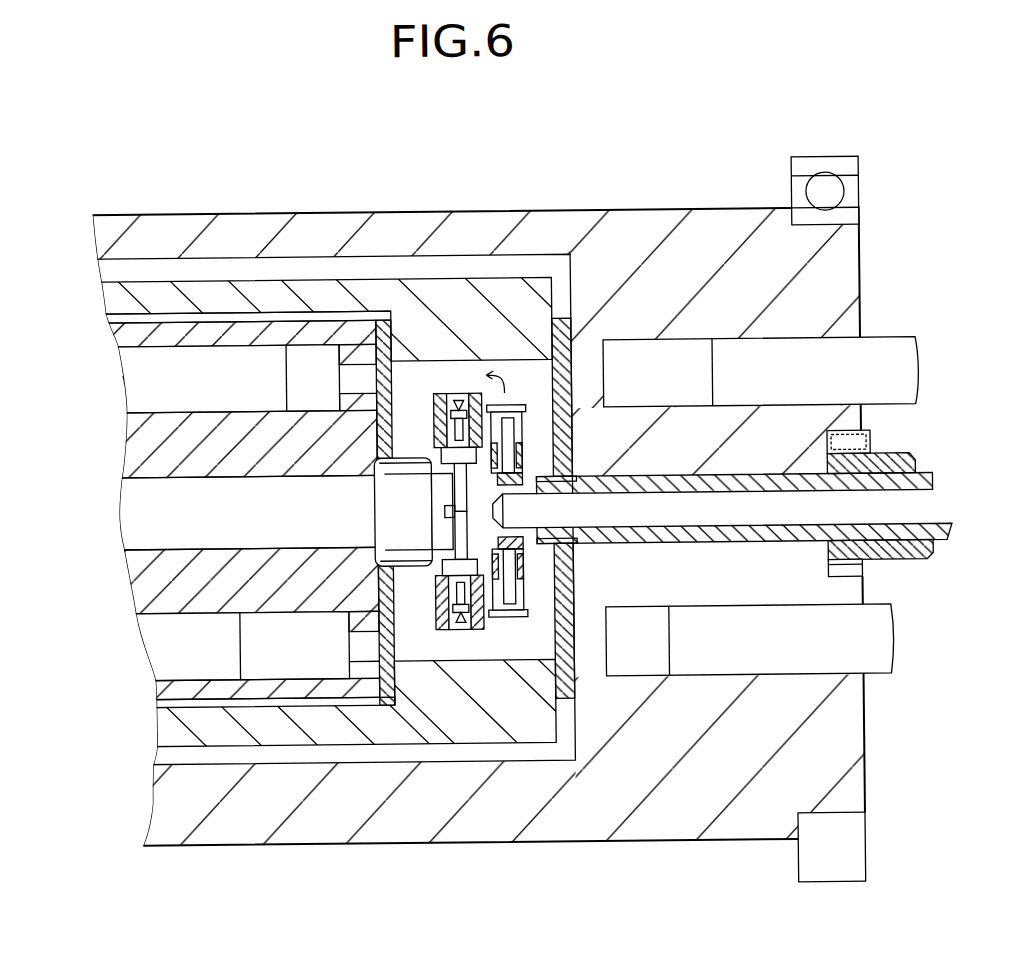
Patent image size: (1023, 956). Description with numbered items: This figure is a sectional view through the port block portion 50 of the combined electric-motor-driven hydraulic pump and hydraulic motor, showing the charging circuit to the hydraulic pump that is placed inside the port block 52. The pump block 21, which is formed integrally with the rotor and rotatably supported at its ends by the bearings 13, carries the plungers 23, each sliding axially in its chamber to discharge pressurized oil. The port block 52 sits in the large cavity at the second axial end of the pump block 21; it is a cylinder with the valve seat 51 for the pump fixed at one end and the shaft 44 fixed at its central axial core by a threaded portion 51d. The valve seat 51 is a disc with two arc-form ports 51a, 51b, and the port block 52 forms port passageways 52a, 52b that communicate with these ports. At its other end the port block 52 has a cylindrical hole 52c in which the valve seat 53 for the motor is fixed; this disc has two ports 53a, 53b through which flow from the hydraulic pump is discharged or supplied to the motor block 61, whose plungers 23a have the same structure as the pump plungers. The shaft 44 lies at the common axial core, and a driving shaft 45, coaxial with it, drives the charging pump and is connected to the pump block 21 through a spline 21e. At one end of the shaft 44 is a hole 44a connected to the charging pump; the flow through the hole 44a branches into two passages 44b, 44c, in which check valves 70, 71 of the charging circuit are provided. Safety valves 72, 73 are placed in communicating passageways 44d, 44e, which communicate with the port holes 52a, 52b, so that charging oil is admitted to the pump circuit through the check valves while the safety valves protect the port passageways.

The bearing 13 is at (819, 161).
The pump block 21 is at (470, 232).
The spline 21e is at (872, 573).
The plunger 23 is at (890, 345).
The plunger 23a is at (146, 383).
The shaft 44 is at (743, 511).
The hole 44a is at (778, 528).
The passage 44b is at (515, 512).
The passage 44c is at (535, 488).
The communicating passageway 44d is at (462, 627).
The communicating passageway 44e is at (458, 393).
The driving shaft 45 is at (899, 471).
The port block portion 50 is at (401, 413).
The valve seat for the hydraulic pump 51 is at (638, 428).
The port 51a is at (568, 644).
The port 51b is at (602, 356).
The threaded portion 51d is at (575, 549).
The port block 52 is at (353, 435).
The port passageway 52a is at (518, 650).
The port passageway 52b is at (480, 380).
The cylindrical hole 52c is at (209, 310).
The valve seat for the hydraulic motor 53 is at (262, 431).
The port 53a is at (376, 703).
The port 53b is at (338, 273).
The motor block 61 is at (162, 333).
The check valve 70 is at (522, 566).
The check valve 71 is at (527, 446).
The safety valve 72 is at (451, 592).
The safety valve 73 is at (449, 432).